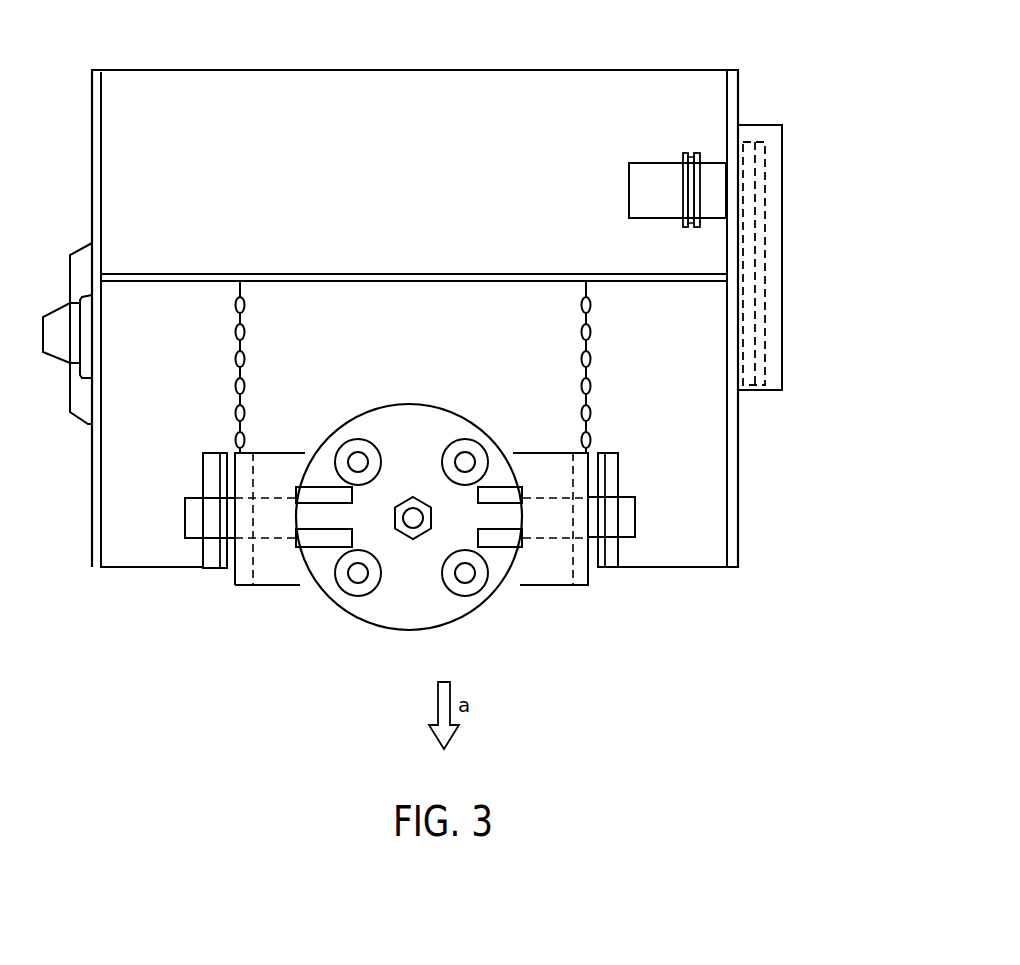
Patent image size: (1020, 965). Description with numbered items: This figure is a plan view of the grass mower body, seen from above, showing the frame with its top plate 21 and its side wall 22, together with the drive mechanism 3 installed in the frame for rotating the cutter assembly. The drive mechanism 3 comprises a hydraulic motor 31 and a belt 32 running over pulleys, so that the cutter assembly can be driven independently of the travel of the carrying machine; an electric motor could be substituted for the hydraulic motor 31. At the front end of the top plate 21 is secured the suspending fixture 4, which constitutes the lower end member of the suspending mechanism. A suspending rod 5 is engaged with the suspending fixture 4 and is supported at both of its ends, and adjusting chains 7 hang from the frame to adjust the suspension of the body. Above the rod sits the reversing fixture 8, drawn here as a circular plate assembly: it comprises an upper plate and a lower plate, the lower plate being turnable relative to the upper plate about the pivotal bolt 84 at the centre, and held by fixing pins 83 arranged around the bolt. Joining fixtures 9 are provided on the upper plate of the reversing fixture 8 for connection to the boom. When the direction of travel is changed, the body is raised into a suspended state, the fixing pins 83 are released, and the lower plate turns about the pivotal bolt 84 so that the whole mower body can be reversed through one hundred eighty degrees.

The drive mechanism 3 is at (790, 160).
The hydraulic motor 31 is at (660, 163).
The belt 32 is at (755, 293).
The adjusting chains 7 is at (245, 386).
The top plate 21 is at (698, 525).
The side wall 22 is at (738, 490).
The suspending fixture 4 is at (200, 552).
The suspending rod 5 is at (185, 520).
The joining fixtures 9 is at (328, 552).
The reversing fixture 8 is at (487, 597).
The fixing pins 83 is at (352, 598).
The pivotal bolt 84 is at (404, 536).